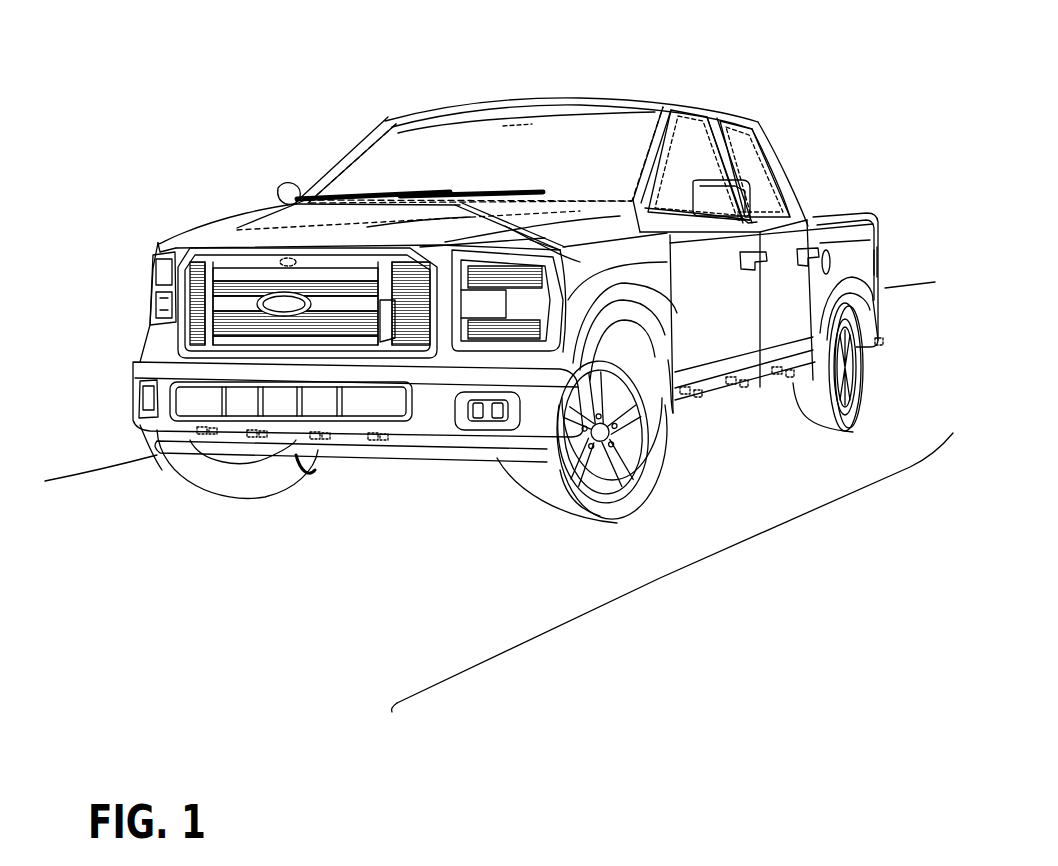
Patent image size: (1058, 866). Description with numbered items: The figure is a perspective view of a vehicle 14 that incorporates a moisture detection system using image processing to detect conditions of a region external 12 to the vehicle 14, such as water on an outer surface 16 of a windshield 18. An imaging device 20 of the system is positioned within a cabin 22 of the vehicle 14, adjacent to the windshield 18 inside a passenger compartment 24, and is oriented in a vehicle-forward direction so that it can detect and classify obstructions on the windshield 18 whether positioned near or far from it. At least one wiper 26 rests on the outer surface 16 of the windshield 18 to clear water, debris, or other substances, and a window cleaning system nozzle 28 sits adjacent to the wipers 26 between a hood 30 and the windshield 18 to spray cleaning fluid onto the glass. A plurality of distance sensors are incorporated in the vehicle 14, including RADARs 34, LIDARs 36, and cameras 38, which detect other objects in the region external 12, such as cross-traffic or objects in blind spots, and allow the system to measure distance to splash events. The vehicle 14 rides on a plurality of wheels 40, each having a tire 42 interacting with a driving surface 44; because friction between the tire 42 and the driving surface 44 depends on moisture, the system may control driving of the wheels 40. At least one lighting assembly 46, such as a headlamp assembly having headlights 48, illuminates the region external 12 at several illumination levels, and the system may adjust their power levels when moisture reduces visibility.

The region external 12 is at (150, 173).
The vehicle 14 is at (522, 102).
The outer surface 16 is at (428, 150).
The windshield 18 is at (543, 262).
The imaging device 20 is at (547, 107).
The cabin 22 is at (677, 158).
The passenger compartment 24 is at (765, 118).
The wiper 26 is at (353, 192).
The nozzle 28 is at (372, 196).
The hood 30 is at (228, 218).
The RADAR 34 is at (197, 432).
The LIDAR 36 is at (213, 437).
The camera 38 is at (287, 250).
The wheel 40 is at (621, 488).
The tire 42 is at (156, 432).
The driving surface 44 is at (455, 606).
The lighting assembly 46 is at (567, 258).
The headlight 48 is at (586, 130).